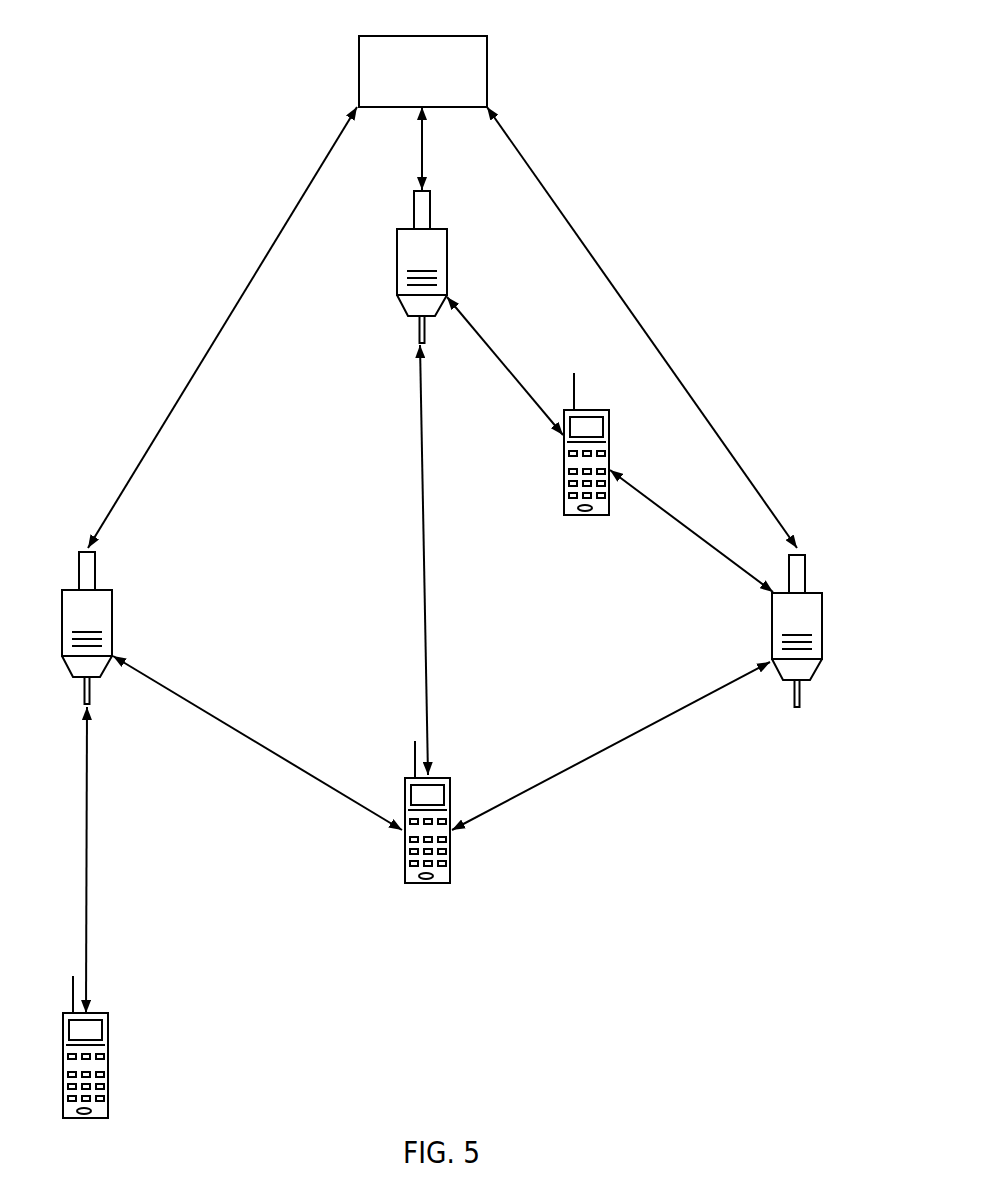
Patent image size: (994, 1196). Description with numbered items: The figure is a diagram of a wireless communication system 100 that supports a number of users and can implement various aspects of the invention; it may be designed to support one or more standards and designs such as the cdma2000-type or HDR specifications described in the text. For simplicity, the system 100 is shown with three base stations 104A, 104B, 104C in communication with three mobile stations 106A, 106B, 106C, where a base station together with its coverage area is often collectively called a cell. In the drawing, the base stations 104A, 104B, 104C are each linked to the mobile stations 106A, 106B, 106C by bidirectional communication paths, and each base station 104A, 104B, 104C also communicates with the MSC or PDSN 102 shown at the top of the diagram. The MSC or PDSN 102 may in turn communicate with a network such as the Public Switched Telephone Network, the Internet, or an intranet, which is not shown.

The wireless communication system 100 is at (172, 82).
The MSC or PDSN 102 is at (448, 36).
The base station 104A is at (110, 590).
The base station 104B is at (446, 229).
The base station 104C is at (796, 708).
The mobile station 106A is at (585, 515).
The mobile station 106B is at (425, 883).
The mobile station 106C is at (100, 1013).